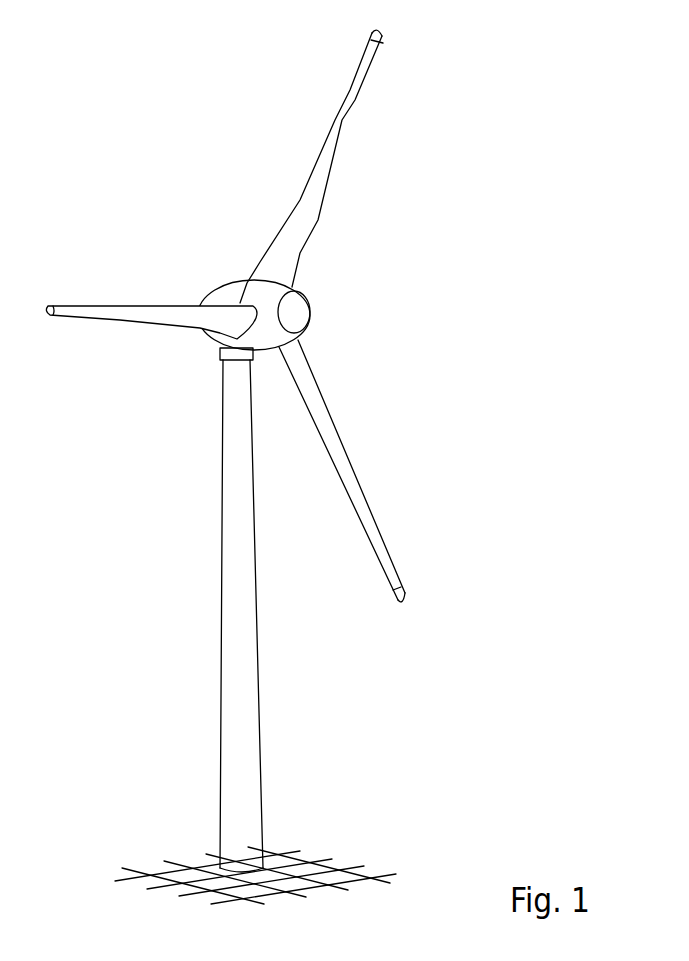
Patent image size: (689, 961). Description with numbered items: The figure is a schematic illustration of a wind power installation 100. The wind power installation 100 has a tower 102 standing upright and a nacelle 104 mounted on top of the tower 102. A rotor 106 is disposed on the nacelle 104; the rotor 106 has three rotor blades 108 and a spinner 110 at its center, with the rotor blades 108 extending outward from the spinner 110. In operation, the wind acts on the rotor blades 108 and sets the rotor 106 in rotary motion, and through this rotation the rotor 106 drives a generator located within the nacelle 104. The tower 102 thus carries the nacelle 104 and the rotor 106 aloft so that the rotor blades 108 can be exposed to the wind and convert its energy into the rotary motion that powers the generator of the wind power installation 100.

The wind power installation 100 is at (276, 448).
The tower 102 is at (245, 690).
The nacelle 104 is at (233, 293).
The rotor 106 is at (276, 313).
The rotor blades 108 is at (342, 127).
The spinner 110 is at (300, 310).